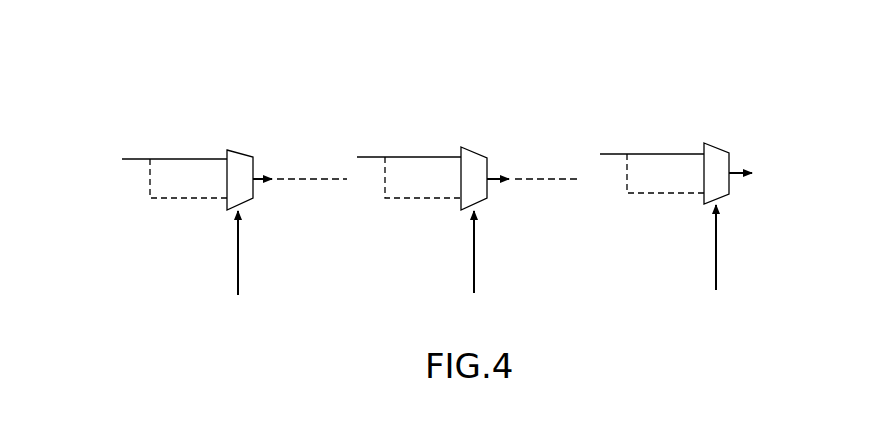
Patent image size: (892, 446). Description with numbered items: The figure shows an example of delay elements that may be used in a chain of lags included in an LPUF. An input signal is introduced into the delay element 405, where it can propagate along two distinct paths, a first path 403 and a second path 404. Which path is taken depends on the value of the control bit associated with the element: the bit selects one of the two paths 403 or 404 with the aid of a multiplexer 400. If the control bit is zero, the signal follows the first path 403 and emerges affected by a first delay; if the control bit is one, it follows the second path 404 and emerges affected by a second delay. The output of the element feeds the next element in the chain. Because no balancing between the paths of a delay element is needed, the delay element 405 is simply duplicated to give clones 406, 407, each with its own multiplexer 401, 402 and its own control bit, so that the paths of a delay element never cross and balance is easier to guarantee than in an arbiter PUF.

The multiplexer 400 is at (248, 156).
The multiplexer 401 is at (477, 152).
The multiplexer 402 is at (717, 147).
The first path 403 is at (205, 158).
The second path 404 is at (195, 199).
The delay element 405 is at (246, 76).
The clone of the delay element 406 is at (438, 89).
The clone of the delay element 407 is at (683, 89).